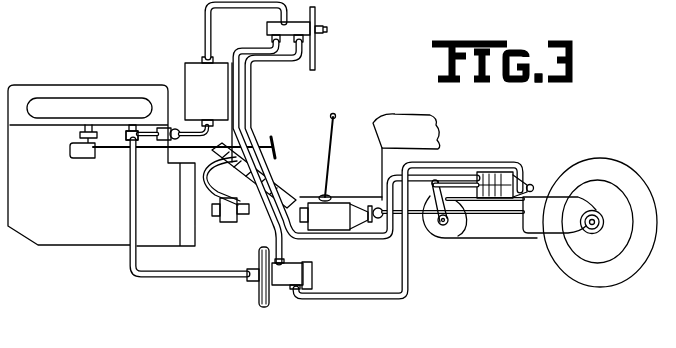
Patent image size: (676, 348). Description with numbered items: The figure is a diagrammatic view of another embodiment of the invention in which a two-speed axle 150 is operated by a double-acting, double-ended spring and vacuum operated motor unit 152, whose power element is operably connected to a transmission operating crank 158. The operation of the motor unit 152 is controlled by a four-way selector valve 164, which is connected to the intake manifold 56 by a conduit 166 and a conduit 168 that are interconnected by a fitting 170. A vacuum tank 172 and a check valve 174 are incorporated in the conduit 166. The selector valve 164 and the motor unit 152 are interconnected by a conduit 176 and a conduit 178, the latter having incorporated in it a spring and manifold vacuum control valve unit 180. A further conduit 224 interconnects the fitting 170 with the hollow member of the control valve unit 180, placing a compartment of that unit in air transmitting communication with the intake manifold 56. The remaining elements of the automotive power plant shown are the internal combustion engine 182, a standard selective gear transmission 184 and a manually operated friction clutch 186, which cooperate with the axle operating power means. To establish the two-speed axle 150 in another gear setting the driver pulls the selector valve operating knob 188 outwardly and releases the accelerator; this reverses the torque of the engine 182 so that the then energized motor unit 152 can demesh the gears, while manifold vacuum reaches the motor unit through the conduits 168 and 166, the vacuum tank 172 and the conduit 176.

The intake manifold 56 is at (57, 108).
The two-speed axle 150 is at (537, 205).
The motor unit 152 is at (502, 182).
The transmission operating crank 158 is at (430, 198).
The four-way selector valve 164 is at (292, 42).
The conduit 166 is at (182, 128).
The conduit 168 is at (110, 118).
The fitting 170 is at (128, 135).
The vacuum tank 172 is at (212, 77).
The check valve 174 is at (163, 140).
The conduit 176 is at (376, 242).
The conduit 178 is at (279, 262).
The spring and manifold vacuum control valve unit 180 is at (285, 278).
The internal combustion engine 182 is at (80, 232).
The selective gear transmission 184 is at (332, 213).
The friction clutch 186 is at (225, 223).
The selector valve operating knob 188 is at (327, 30).
The conduit 224 is at (198, 280).